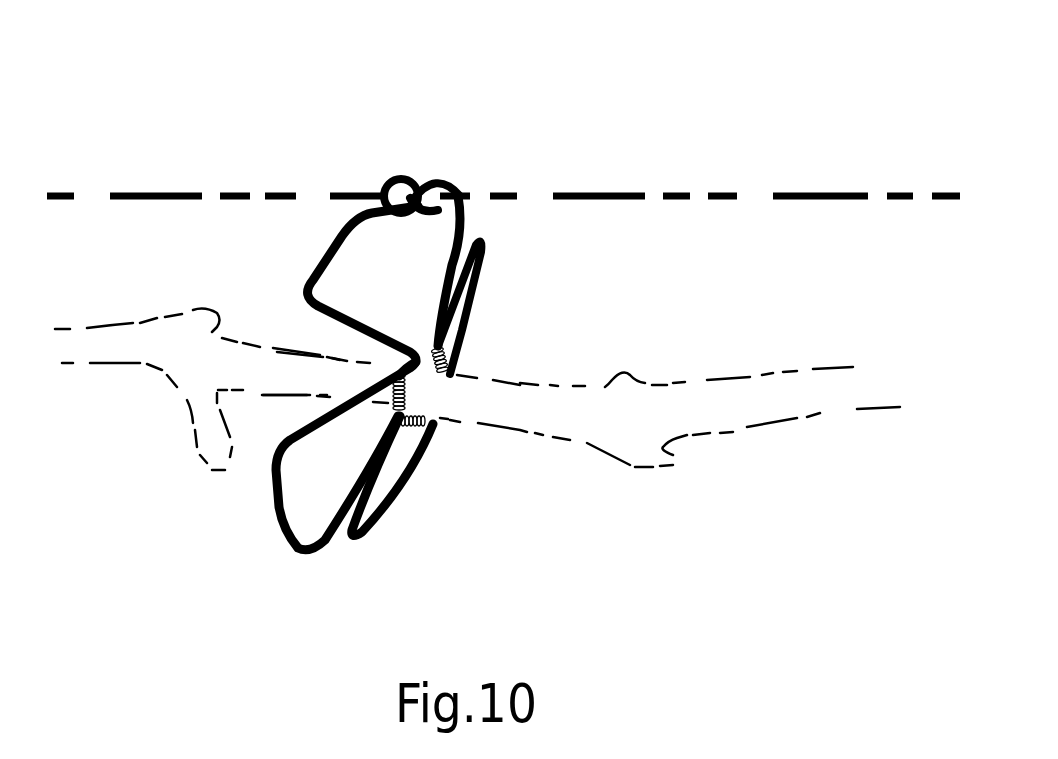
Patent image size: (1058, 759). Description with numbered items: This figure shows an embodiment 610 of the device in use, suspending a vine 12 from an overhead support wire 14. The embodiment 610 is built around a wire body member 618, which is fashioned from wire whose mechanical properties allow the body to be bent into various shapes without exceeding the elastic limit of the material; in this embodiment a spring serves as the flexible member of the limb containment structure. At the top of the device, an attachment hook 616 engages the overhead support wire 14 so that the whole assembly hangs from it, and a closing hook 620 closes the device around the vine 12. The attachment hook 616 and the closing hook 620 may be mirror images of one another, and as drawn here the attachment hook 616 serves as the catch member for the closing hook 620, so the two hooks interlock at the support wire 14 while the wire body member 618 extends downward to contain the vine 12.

The embodiment of the device 610 is at (450, 278).
The attachment hook 616 is at (388, 173).
The closing hook 620 is at (447, 175).
The wire body member 618 is at (475, 317).
The overhead support wire 14 is at (803, 192).
The vine 12 is at (750, 410).